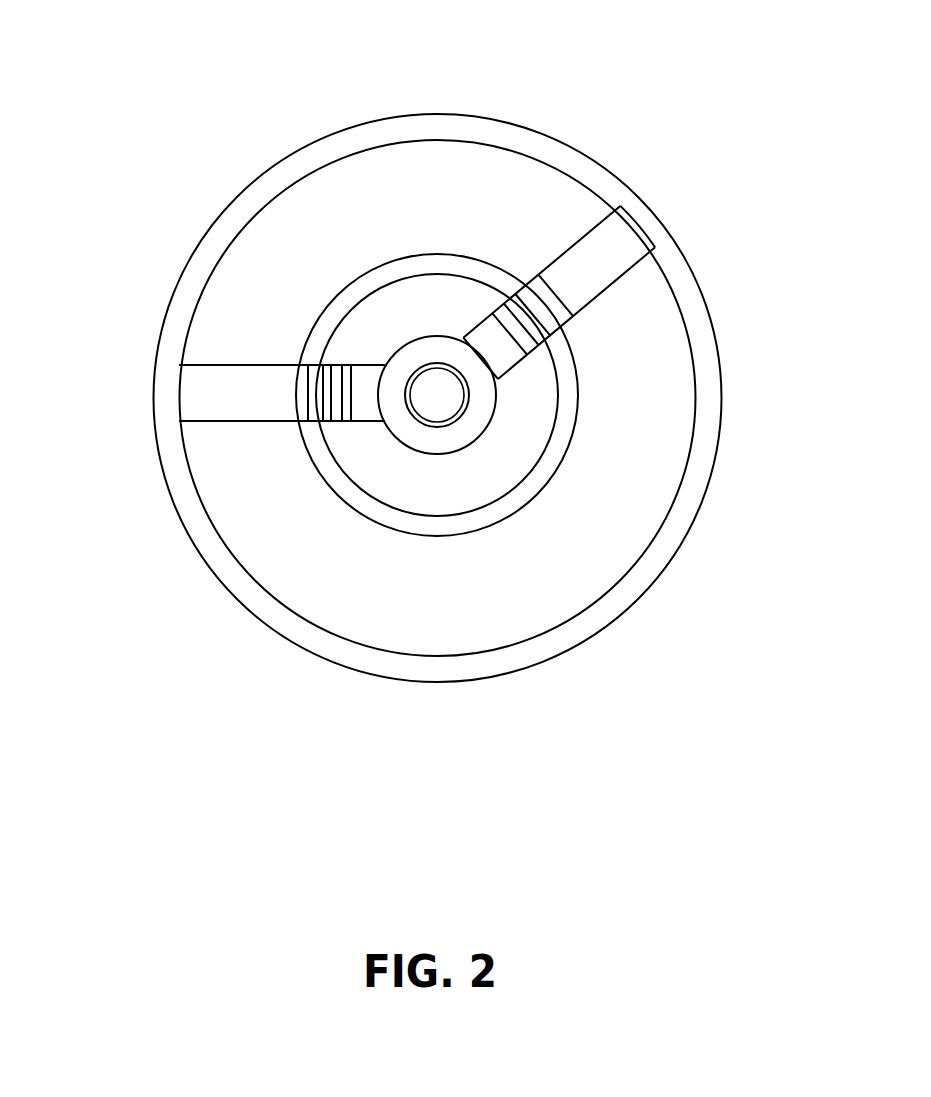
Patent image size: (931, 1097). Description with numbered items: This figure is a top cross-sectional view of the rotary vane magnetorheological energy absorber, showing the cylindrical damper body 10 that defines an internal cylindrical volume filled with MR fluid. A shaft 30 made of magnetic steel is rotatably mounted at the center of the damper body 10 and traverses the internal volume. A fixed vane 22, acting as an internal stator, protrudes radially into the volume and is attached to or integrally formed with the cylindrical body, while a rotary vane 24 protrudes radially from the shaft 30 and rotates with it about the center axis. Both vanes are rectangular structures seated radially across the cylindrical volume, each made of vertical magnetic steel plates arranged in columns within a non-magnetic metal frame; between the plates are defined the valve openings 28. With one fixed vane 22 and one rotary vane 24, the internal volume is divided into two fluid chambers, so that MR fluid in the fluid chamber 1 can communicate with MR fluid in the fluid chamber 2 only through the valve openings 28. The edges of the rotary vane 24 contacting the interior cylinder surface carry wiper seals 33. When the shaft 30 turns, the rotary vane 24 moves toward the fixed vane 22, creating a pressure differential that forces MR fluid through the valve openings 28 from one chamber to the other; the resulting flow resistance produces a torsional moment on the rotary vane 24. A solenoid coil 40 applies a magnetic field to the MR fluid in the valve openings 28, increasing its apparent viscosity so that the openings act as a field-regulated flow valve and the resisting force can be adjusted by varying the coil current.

The fluid chamber 1 is at (362, 222).
The fluid chamber 2 is at (525, 557).
The cylindrical damper body 10 is at (172, 477).
The fixed vane structure 22 is at (247, 357).
The rotary vane structure 24 is at (592, 274).
The valve openings 28 is at (327, 374).
The shaft 30 is at (497, 393).
The wiper seals 33 is at (630, 220).
The solenoid coil 40 is at (392, 487).